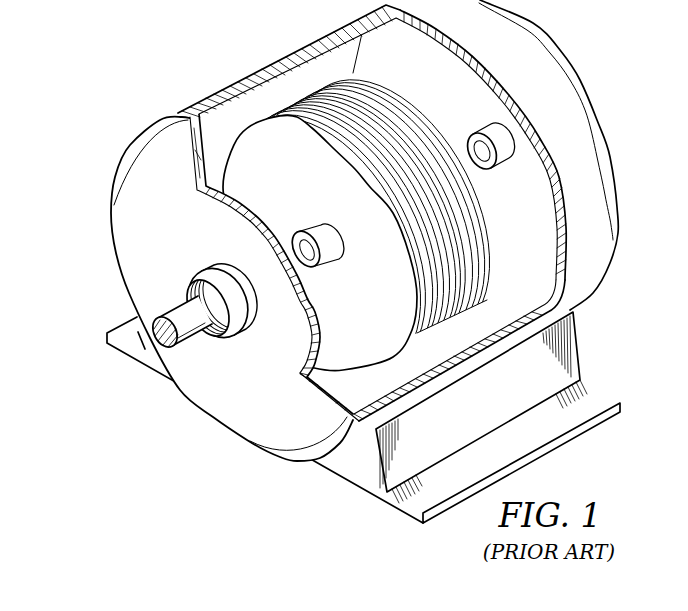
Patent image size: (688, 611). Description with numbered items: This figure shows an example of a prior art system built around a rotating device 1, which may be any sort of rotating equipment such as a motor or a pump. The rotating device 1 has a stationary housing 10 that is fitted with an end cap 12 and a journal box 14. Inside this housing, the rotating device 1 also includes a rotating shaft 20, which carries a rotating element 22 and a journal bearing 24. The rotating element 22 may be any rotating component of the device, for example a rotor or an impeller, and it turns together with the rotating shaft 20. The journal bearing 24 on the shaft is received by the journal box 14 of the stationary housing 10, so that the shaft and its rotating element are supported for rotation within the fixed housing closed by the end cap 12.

The rotating device 1 is at (73, 162).
The stationary housing 10 is at (268, 56).
The end cap 12 is at (130, 259).
The journal box 14 is at (245, 333).
The rotating shaft 20 is at (192, 343).
The rotating element 22 is at (403, 83).
The journal bearing 24 is at (186, 299).